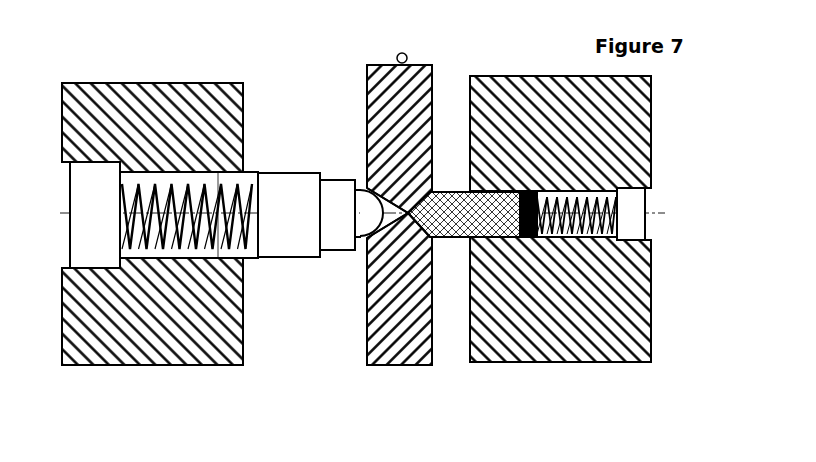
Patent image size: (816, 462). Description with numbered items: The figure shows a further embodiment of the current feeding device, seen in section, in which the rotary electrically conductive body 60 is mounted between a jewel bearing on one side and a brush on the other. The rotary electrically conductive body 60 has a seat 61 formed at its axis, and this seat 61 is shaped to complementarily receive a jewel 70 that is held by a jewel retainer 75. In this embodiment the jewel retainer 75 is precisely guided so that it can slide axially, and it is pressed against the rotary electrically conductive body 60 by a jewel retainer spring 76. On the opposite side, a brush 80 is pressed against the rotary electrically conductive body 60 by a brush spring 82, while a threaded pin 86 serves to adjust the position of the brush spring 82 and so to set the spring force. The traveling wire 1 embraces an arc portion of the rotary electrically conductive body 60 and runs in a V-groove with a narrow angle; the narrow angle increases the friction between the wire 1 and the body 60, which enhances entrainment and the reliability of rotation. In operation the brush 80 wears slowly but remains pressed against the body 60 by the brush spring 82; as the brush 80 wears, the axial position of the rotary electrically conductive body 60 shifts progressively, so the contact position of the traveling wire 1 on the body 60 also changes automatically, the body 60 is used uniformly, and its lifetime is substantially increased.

The traveling wire 1 is at (402, 52).
The rotary electrically conductive body 60 is at (375, 346).
The seat 61 is at (367, 298).
The jewel 70 is at (362, 188).
The jewel retainer 75 is at (333, 195).
The jewel retainer spring 76 is at (255, 262).
The brush 80 is at (460, 191).
The brush spring 82 is at (575, 222).
The threaded pin 86 is at (637, 236).